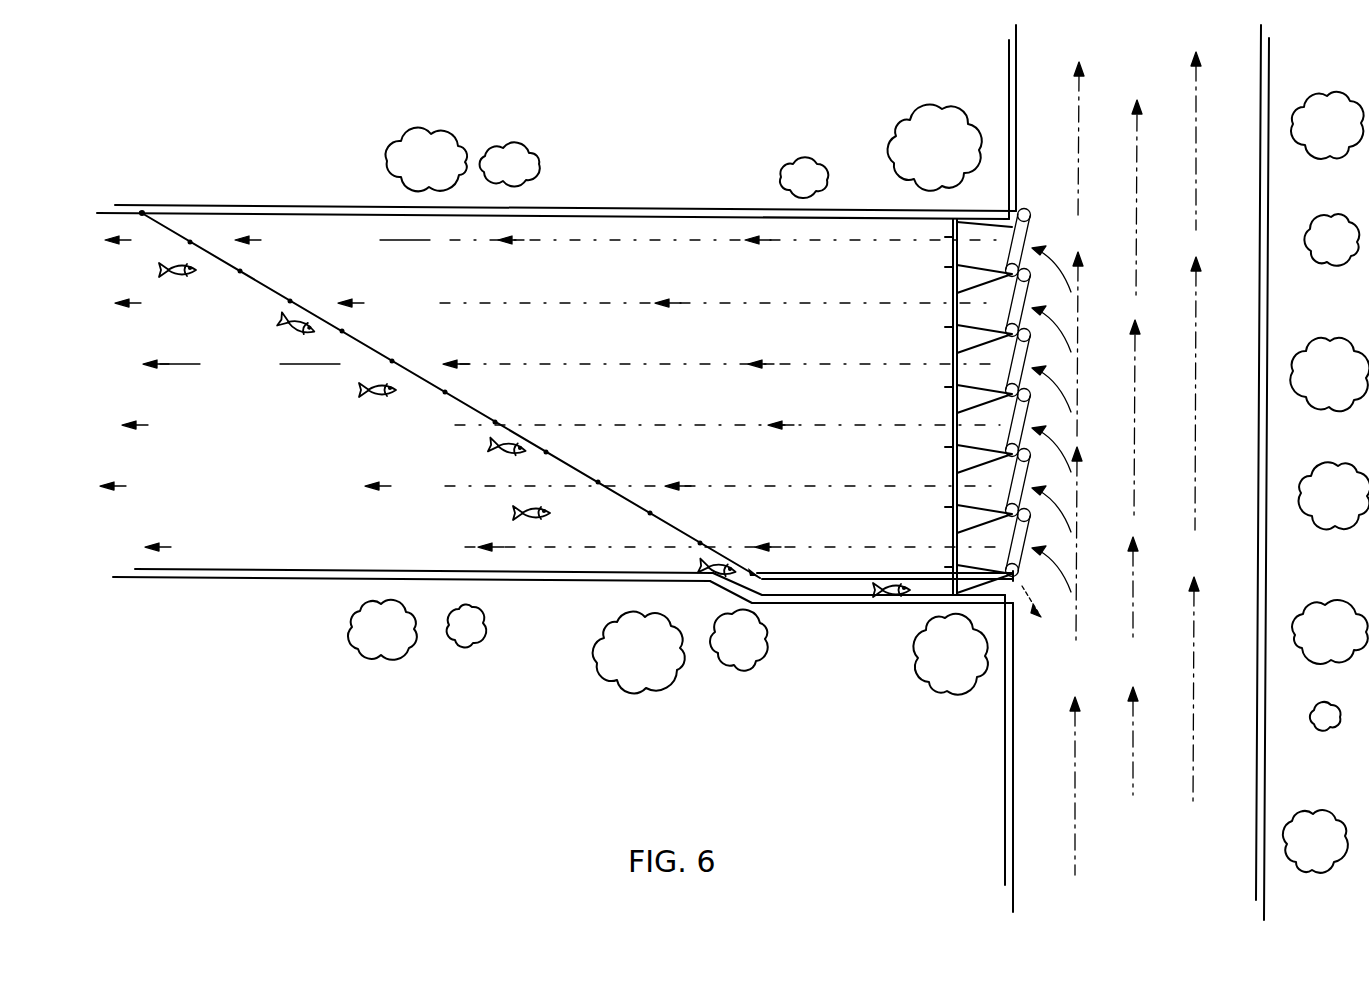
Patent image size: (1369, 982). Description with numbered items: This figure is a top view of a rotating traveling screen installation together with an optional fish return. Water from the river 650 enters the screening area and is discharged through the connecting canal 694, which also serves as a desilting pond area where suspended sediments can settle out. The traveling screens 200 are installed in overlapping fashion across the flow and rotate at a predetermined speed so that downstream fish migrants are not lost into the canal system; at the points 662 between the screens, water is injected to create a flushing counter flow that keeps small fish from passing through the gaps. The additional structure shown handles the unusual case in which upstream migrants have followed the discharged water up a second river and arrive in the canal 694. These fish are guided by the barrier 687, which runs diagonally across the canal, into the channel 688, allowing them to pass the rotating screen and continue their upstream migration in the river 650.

The canal 694 is at (291, 452).
The barrier 687 is at (585, 472).
The channel 688 is at (852, 595).
The points between the screens 662 is at (1024, 258).
The traveling screens 200 is at (1016, 413).
The river 650 is at (1009, 708).